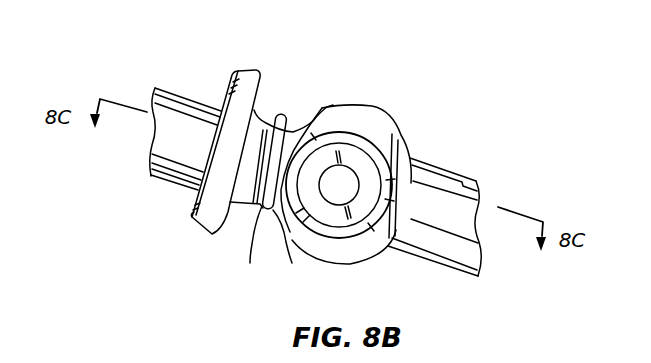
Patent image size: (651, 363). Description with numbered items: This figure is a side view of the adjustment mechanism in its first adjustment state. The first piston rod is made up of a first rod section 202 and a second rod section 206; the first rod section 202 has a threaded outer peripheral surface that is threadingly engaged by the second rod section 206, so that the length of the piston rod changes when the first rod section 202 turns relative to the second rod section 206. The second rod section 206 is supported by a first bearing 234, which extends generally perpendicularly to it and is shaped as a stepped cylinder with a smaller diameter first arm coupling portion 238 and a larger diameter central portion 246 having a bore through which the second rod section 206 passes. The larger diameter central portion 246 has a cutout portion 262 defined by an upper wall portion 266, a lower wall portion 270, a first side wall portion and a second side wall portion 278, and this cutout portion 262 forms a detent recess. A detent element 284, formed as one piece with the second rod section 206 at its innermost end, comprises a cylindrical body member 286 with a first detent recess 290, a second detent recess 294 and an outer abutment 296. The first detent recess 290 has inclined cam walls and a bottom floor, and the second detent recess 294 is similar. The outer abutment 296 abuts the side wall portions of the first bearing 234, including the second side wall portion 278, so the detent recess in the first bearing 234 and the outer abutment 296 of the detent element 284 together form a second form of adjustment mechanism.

The first rod section 202 is at (184, 103).
The second rod section 206 is at (441, 183).
The first bearing 234 is at (378, 98).
The first arm coupling portion 238 is at (338, 218).
The larger diameter central portion 246 is at (400, 136).
The cutout portion 262 is at (308, 102).
The upper wall portion 266 is at (322, 125).
The lower wall portion 270 is at (284, 248).
The second side wall portion 278 is at (262, 235).
The detent element 284 is at (236, 58).
The cylindrical body member 286 is at (190, 214).
The first detent recess 290 is at (269, 97).
The second detent recess 294 is at (229, 238).
The outer abutment 296 is at (300, 146).